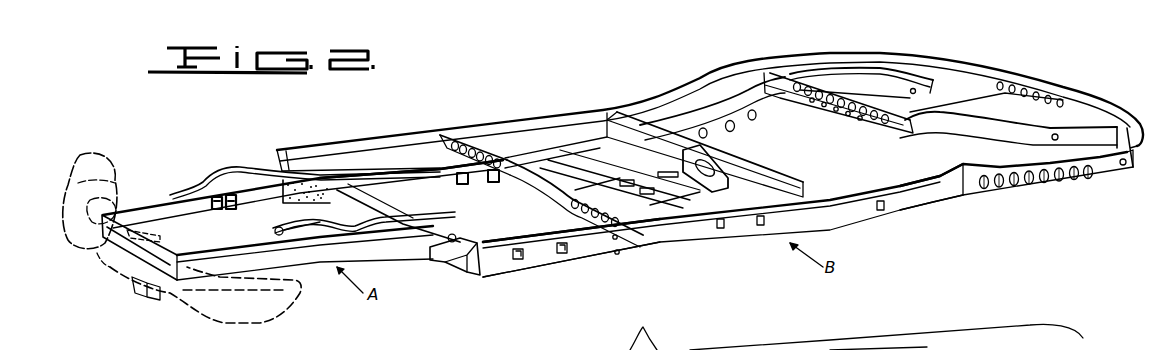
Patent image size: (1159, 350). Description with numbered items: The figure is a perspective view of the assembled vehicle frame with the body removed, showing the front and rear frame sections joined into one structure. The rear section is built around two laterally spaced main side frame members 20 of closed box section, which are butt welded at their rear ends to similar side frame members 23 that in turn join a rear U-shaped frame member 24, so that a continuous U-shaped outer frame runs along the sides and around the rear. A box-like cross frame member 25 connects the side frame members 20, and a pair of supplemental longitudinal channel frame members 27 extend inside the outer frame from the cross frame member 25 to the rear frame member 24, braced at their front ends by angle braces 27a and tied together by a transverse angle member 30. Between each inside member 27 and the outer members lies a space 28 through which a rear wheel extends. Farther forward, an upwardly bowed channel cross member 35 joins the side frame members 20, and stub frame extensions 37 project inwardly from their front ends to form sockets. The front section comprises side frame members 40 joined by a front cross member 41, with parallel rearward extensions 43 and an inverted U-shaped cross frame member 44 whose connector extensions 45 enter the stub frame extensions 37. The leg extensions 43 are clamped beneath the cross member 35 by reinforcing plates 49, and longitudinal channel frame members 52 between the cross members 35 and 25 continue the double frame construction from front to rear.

The side frame member 20 is at (550, 130).
The side frame member 23 is at (1040, 185).
The rear frame member 24 is at (1077, 103).
The cross frame member 25 is at (787, 190).
The supplemental longitudinal channel frame member 27 is at (883, 80).
The angle brace 27a is at (694, 120).
The space 28 is at (963, 157).
The transverse angle member 30 is at (840, 117).
The cross member 35 is at (560, 197).
The stub frame extension 37 is at (312, 167).
The side frame member 40 is at (173, 191).
The front cross member 41 is at (115, 233).
The rearward extension 43 is at (387, 183).
The cross frame member 44 is at (400, 218).
The connector extension 45 is at (443, 258).
The reinforcing plate 49 is at (500, 174).
The longitudinal channel shaped frame member 52 is at (547, 160).